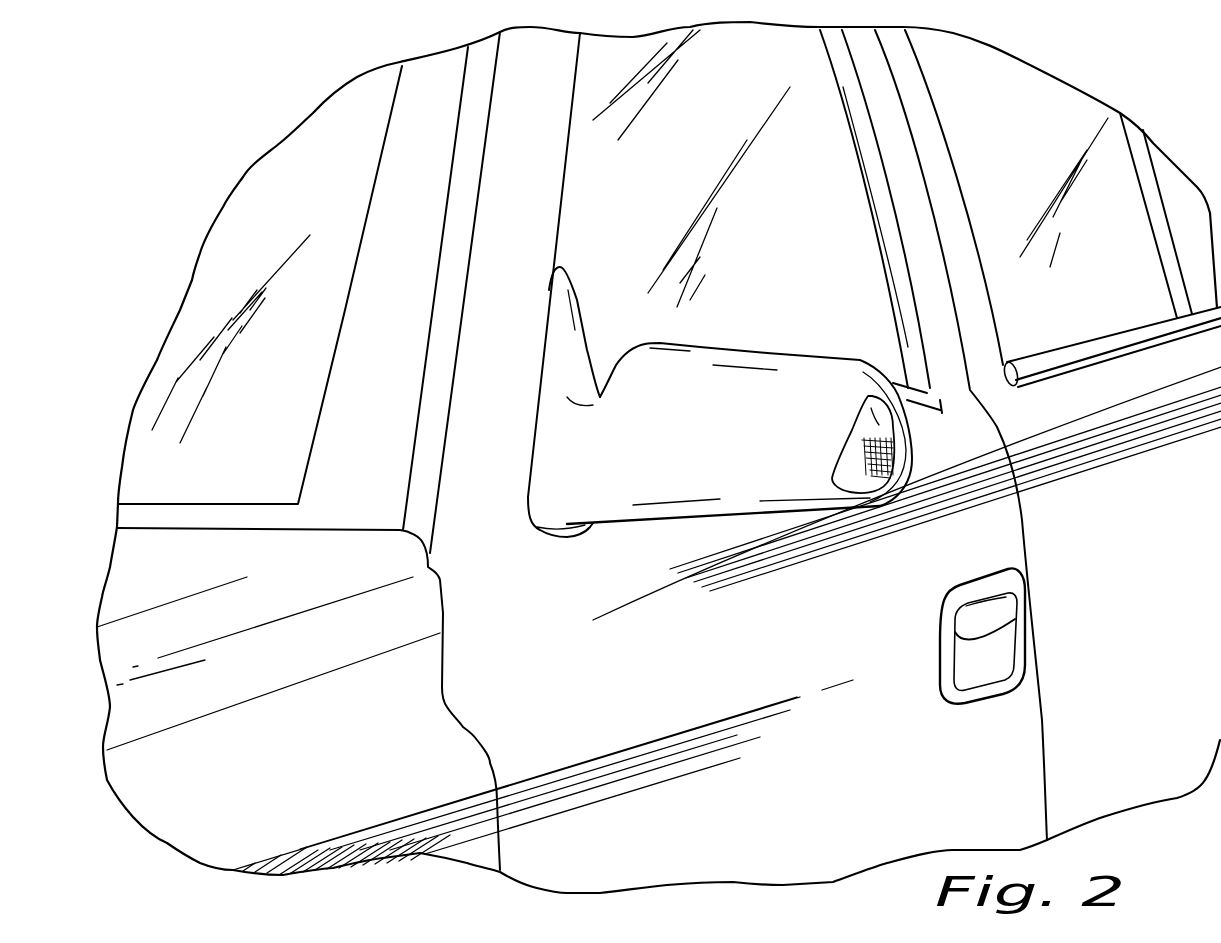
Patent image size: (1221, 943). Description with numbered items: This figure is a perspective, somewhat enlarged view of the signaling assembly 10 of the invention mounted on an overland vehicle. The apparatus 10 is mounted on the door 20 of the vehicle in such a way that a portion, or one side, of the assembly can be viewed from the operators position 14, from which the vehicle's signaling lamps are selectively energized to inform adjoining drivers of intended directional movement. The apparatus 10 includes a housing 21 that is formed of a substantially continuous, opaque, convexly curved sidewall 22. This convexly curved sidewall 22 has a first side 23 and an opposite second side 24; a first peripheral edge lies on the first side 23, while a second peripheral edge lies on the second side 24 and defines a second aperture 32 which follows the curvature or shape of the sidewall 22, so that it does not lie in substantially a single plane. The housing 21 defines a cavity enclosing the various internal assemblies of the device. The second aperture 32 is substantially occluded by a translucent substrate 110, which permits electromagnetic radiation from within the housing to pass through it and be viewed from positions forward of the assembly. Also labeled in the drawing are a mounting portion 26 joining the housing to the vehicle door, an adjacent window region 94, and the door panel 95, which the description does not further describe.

The signaling assembly 10 is at (687, 441).
The operators position 14 is at (283, 353).
The door 20 is at (917, 715).
The housing 21 is at (793, 483).
The convexly curved sidewall 22 is at (740, 447).
The first side 23 is at (904, 388).
The second side 24 is at (578, 467).
The mounting arm 26 is at (571, 352).
The second aperture 32 is at (866, 408).
The rear window 94 is at (1078, 318).
The door panel 95 is at (673, 670).
The translucent substrate 110 is at (870, 472).